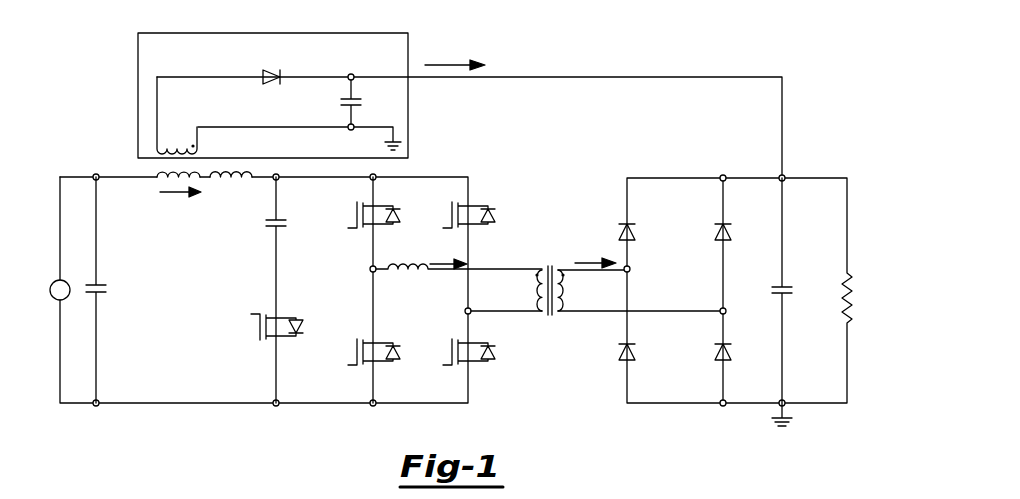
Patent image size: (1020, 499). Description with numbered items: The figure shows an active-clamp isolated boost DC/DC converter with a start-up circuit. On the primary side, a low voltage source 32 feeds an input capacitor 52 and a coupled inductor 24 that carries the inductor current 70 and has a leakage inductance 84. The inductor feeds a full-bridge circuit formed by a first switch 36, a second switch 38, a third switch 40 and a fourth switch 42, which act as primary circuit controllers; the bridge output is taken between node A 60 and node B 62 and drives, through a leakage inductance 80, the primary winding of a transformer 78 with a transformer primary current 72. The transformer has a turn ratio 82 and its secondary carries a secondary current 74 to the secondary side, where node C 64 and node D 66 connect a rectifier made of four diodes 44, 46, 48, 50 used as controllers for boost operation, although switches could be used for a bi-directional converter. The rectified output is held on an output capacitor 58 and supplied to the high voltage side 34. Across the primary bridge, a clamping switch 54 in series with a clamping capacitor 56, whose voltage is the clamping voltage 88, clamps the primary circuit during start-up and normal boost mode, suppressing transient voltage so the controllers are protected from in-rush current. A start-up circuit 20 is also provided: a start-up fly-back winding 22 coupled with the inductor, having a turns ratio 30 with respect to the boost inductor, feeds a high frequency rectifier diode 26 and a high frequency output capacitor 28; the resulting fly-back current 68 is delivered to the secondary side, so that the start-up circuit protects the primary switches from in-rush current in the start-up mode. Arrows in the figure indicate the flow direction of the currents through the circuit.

The start-up circuit 20 is at (205, 33).
The feedback winding 22 is at (138, 120).
The coupled inductor 24 is at (140, 192).
The high frequency rectifier diode 26 is at (303, 48).
The output capacitor 28 is at (390, 100).
The turns ratio of coupled inductor 30 is at (95, 148).
The low voltage source 32 is at (42, 268).
The high voltage source side 34 is at (876, 288).
The switch S1 36 is at (350, 190).
The switch S2 38 is at (432, 356).
The switch S3 40 is at (342, 350).
The switch S4 42 is at (450, 195).
The diode S5 44 is at (618, 222).
The diode S6 46 is at (698, 368).
The diode S7 48 is at (602, 372).
The diode S8 50 is at (712, 222).
The input capacitor 52 is at (132, 295).
The clamping switch 54 is at (240, 350).
The clamping capacitor 56 is at (250, 244).
The output capacitor 58 is at (806, 300).
The node A 60 is at (352, 268).
The node B 62 is at (452, 308).
The node C 64 is at (650, 260).
The node D 66 is at (742, 305).
The fly-back current 68 is at (446, 38).
The inductor current 70 is at (183, 213).
The transformer primary current 72 is at (440, 238).
The secondary current 74 is at (585, 235).
The transformer 78 is at (540, 242).
The leakage inductance of transformer 80 is at (410, 252).
The turn ratio of transformer 82 is at (540, 348).
The leakage inductance of coupled inductor 84 is at (266, 177).
The clamping capacitor voltage 88 is at (307, 238).